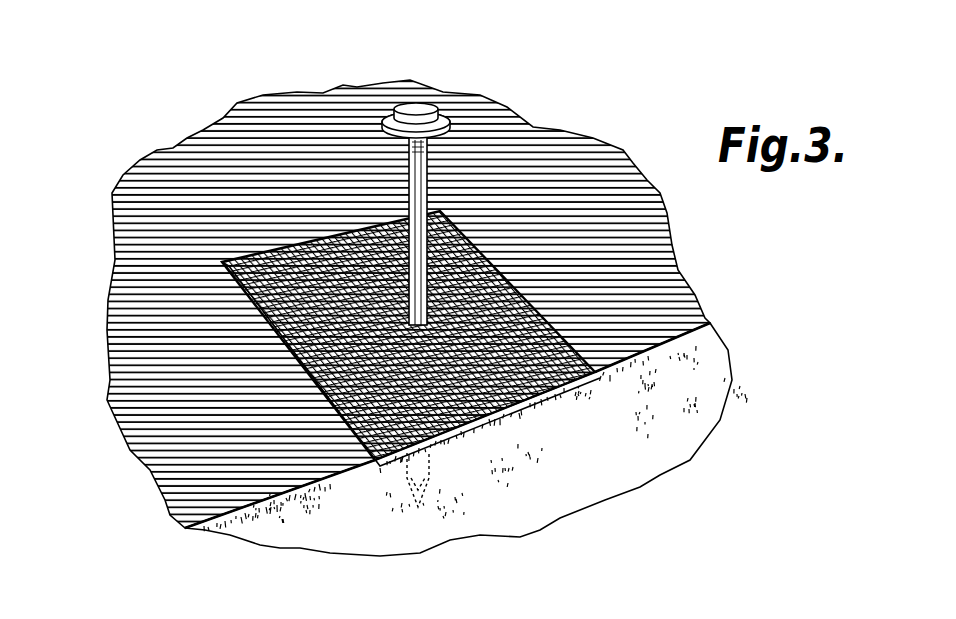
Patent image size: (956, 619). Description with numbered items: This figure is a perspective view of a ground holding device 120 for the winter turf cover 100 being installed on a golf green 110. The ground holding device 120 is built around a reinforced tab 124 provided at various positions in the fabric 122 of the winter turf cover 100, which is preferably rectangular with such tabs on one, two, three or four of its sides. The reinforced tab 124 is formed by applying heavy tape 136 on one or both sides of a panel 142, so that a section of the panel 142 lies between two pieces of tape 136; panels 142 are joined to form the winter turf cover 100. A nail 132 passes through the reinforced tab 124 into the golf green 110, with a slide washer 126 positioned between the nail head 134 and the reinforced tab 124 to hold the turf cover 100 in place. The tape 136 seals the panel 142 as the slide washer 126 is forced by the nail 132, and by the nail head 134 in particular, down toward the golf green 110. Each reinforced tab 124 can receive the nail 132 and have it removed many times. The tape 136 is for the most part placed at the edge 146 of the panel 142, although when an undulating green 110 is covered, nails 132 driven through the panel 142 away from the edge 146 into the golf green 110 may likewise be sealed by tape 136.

The winter turf cover 100 is at (400, 302).
The golf green 110 is at (632, 472).
The ground holding device 120 is at (400, 311).
The fabric 122 is at (137, 280).
The reinforced tab 124 is at (548, 322).
The slide washer 126 is at (386, 117).
The nail 132 is at (423, 183).
The nail head 134 is at (416, 109).
The tape 136 is at (503, 460).
The panel 142 is at (305, 473).
The edge of panel 146 is at (602, 375).